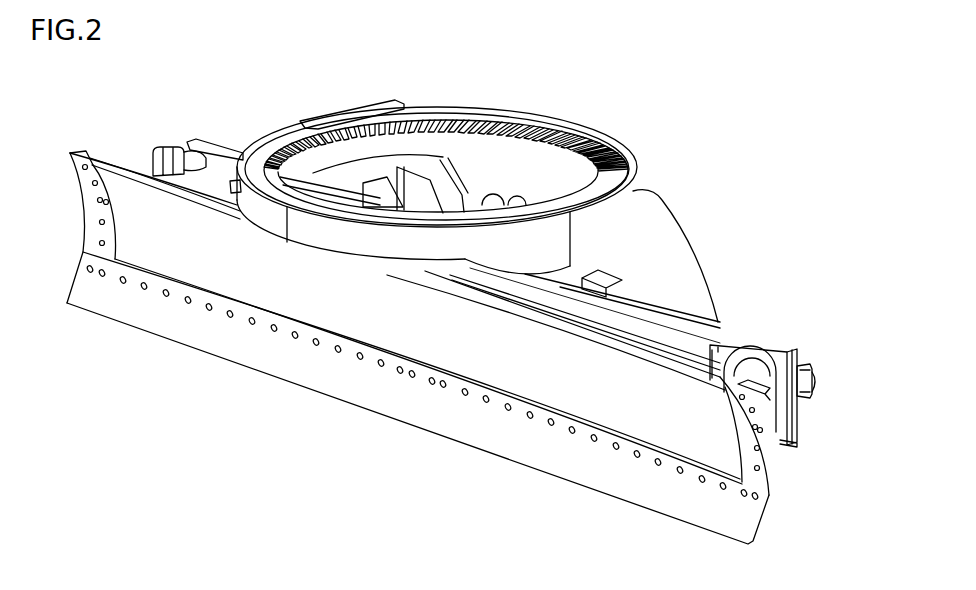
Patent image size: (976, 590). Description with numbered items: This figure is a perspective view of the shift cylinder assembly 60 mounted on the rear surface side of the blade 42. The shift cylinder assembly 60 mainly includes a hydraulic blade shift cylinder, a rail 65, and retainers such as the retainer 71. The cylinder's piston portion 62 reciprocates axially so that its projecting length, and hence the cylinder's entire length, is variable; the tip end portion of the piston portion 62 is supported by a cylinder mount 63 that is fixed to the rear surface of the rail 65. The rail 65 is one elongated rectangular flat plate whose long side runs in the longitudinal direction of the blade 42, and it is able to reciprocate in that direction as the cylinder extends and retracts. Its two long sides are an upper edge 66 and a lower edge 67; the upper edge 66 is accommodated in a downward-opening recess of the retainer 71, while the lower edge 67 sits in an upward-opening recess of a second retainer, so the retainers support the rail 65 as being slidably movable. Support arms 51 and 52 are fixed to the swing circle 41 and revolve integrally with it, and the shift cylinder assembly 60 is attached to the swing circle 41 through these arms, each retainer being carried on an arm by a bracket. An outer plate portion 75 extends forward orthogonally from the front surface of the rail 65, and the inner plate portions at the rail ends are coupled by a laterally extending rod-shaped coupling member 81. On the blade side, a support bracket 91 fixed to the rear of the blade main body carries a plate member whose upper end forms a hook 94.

The swing circle 41 is at (480, 111).
The blade 42 is at (357, 318).
The support arm 51 is at (636, 226).
The support arm 52 is at (283, 121).
The shift cylinder assembly 60 is at (822, 343).
The piston portion 62 is at (803, 380).
The cylinder mount 63 is at (803, 362).
The rail 65 is at (687, 340).
The upper edge 66 is at (762, 350).
The lower edge 67 is at (784, 448).
The retainer 71 is at (396, 205).
The outer plate portion 75 is at (766, 362).
The coupling member 81 is at (690, 352).
The support bracket 91 is at (765, 396).
The hook 94 is at (737, 342).